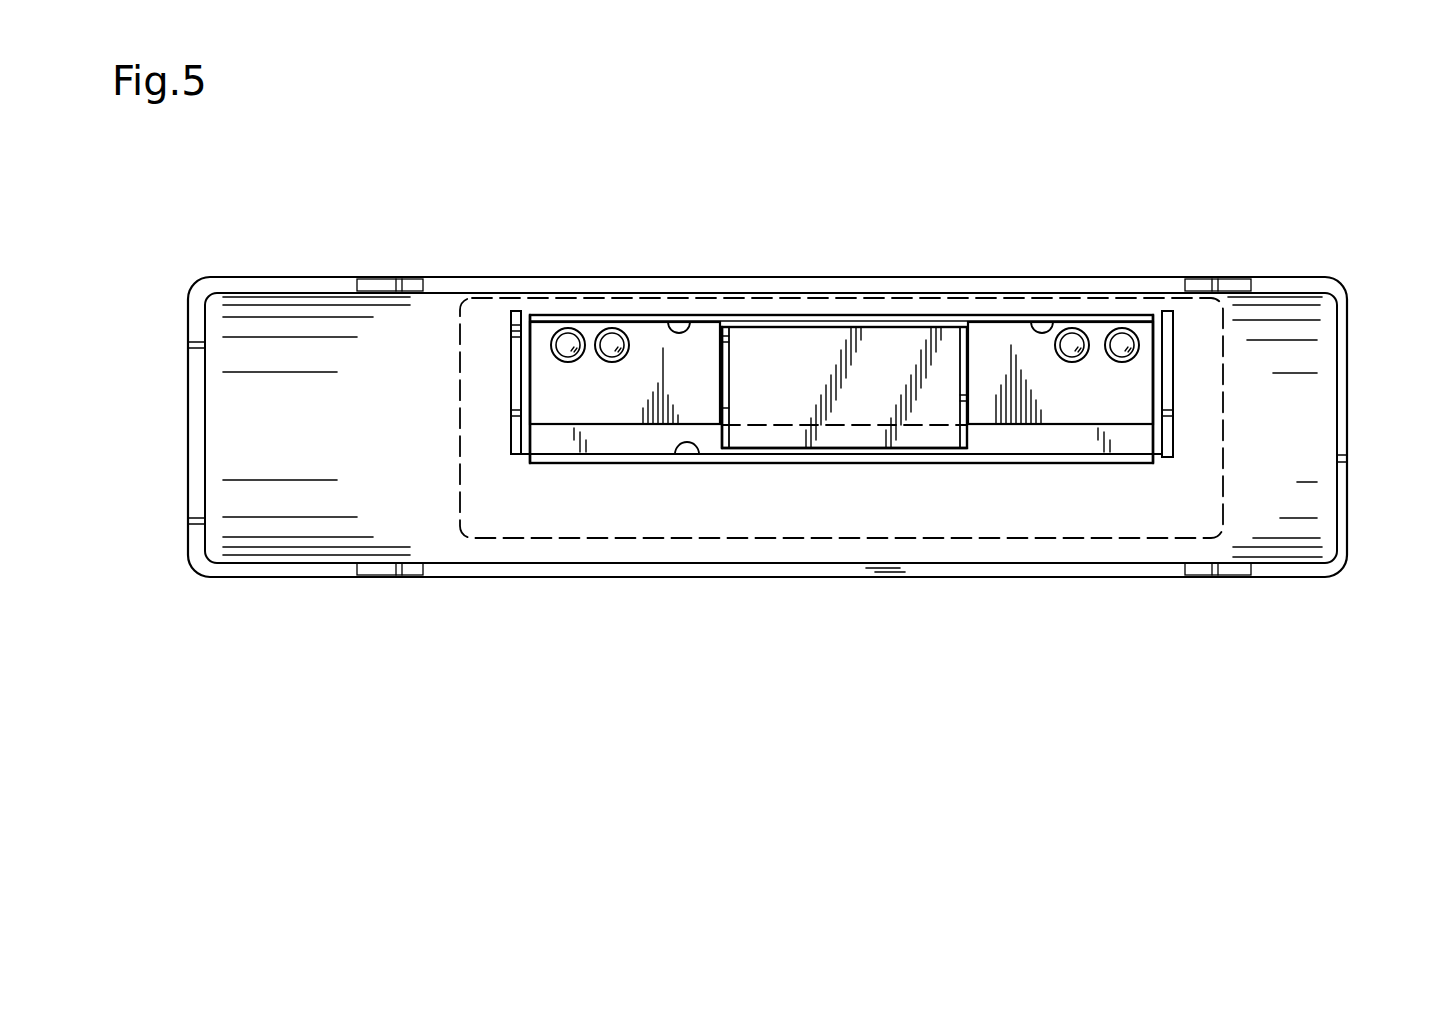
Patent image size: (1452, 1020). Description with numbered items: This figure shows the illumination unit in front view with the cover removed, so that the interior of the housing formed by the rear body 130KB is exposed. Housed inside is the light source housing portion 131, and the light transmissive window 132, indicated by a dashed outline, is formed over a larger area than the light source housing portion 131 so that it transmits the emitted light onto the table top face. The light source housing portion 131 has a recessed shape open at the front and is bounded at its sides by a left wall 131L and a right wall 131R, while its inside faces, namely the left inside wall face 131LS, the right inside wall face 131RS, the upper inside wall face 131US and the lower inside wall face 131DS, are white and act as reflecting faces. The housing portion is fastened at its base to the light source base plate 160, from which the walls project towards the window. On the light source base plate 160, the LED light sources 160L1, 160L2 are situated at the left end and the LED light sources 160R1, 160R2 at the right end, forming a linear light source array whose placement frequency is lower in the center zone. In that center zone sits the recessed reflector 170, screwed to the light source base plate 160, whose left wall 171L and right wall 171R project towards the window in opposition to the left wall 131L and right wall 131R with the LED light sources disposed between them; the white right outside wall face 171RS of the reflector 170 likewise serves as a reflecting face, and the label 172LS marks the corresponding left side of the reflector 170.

The rear body 130KB is at (1317, 278).
The light transmissive window 132 is at (1165, 540).
The light source housing portion 131 is at (895, 312).
The left inside wall face 131LS is at (523, 372).
The right inside wall face 131RS is at (1162, 372).
The upper inside wall face 131US is at (670, 334).
The lower inside wall face 131DS is at (693, 443).
The left wall 131L is at (509, 410).
The right wall 131R is at (1173, 378).
The light source base plate 160 is at (647, 335).
The LED light source 160L1 is at (568, 362).
The LED light source 160L2 is at (612, 362).
The LED light source 160R1 is at (1122, 362).
The LED light source 160R2 is at (1072, 362).
The reflector 170 is at (965, 322).
The left wall 171L is at (729, 375).
The right wall 171R is at (968, 373).
The right outside wall face 171RS is at (970, 440).
The window left side 172LS is at (710, 358).